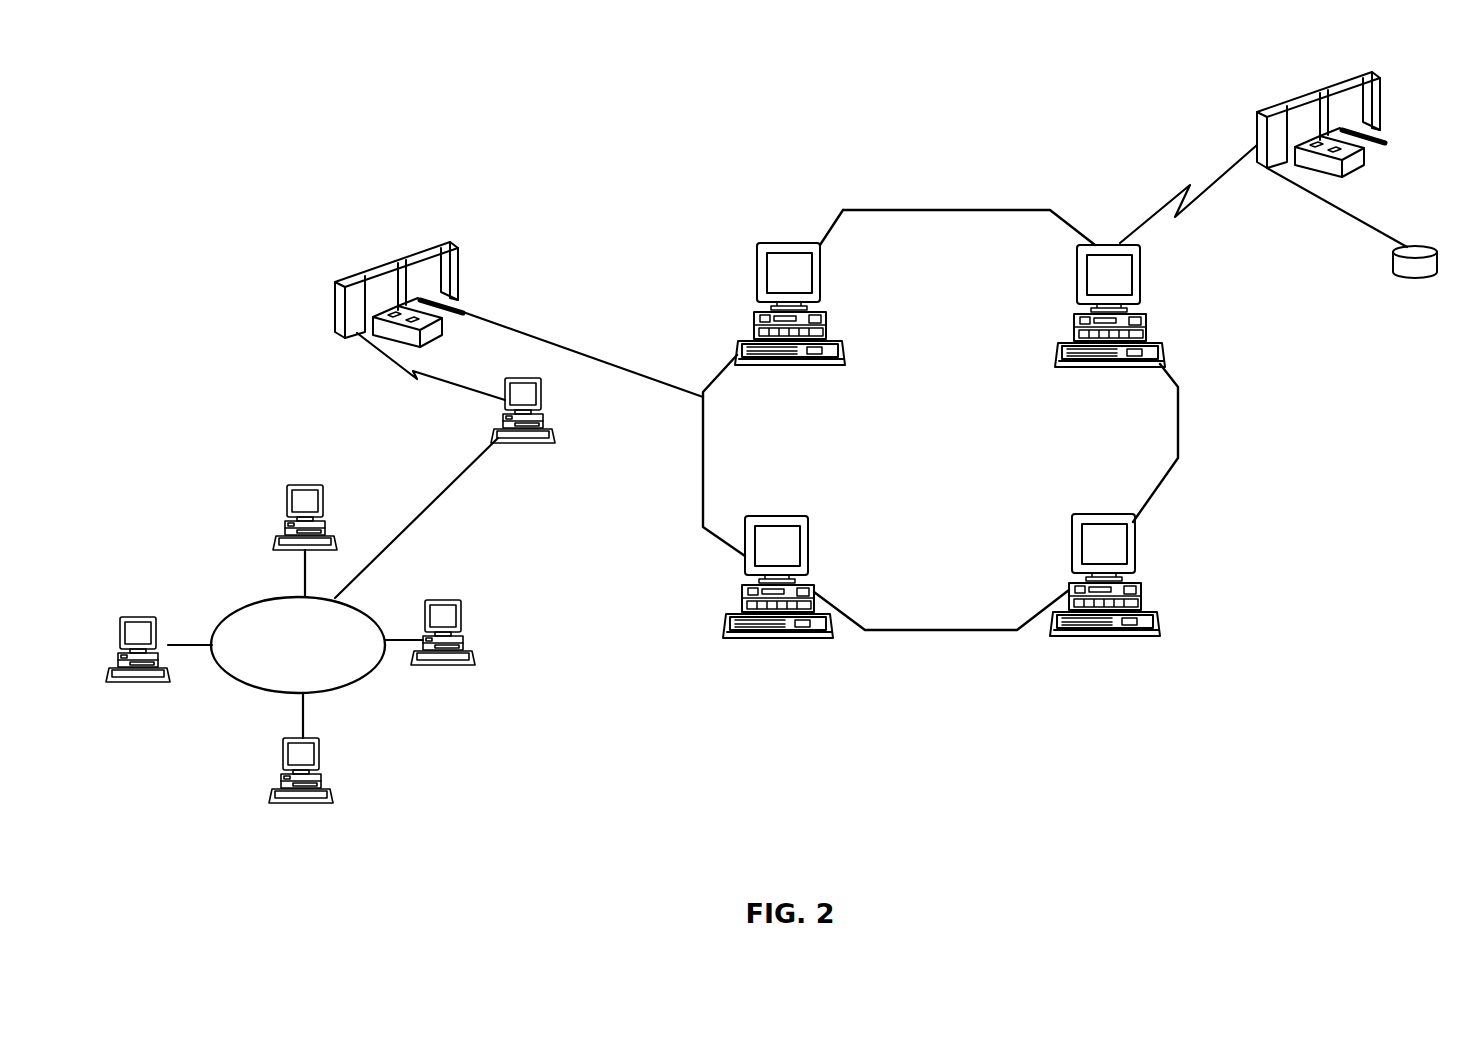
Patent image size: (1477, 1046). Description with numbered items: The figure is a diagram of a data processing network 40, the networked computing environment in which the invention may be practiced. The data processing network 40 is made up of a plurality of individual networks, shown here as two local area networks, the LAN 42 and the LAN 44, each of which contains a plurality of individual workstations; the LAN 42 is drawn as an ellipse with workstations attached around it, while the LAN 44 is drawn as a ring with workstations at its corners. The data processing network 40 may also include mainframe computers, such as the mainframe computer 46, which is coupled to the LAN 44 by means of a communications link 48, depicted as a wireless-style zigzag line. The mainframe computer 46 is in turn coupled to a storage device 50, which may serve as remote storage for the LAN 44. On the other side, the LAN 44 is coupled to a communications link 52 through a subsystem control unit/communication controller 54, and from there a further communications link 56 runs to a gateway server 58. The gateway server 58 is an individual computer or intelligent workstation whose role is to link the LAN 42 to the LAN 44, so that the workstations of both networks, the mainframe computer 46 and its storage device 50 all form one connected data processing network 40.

The data processing network 40 is at (960, 198).
The LAN 42 is at (295, 644).
The LAN 44 is at (940, 420).
The mainframe computer 46 is at (1320, 90).
The communications link 48 is at (1207, 185).
The storage device 50 is at (1428, 245).
The communications link 52 is at (585, 357).
The subsystem control unit/communication controller 54 is at (452, 245).
The communications link 56 is at (371, 344).
The gateway server 58 is at (520, 377).